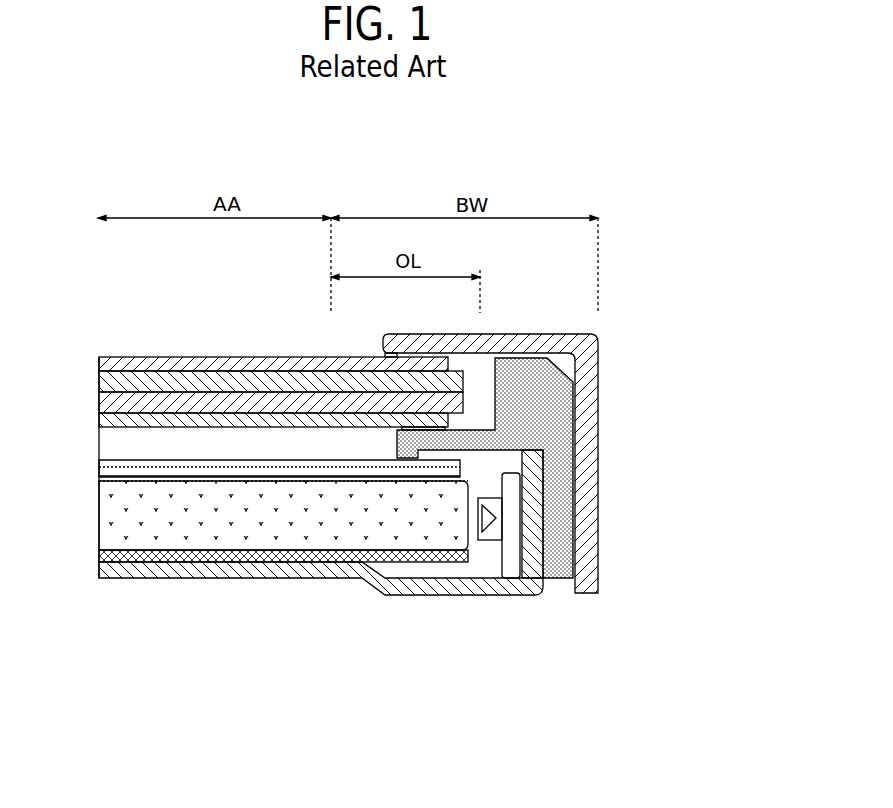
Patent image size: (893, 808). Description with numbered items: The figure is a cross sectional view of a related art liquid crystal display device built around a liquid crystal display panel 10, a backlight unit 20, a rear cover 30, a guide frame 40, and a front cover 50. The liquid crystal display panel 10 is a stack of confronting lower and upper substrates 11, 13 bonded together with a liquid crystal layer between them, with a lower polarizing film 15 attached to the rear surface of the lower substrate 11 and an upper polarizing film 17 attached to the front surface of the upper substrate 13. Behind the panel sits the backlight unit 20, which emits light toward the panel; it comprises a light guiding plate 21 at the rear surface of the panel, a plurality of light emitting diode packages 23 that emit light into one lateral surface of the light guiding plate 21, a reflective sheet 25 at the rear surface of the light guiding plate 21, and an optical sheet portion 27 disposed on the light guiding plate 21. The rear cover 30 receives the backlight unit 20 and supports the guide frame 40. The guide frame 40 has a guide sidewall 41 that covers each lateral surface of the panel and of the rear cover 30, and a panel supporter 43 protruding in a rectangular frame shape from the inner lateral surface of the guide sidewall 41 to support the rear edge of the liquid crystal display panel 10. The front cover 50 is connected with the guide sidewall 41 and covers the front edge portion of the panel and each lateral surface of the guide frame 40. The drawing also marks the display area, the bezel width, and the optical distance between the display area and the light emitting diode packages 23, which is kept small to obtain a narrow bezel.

The liquid crystal display panel 10 is at (281, 338).
The lower substrate 11 is at (172, 413).
The upper substrate 13 is at (210, 382).
The lower polarizing film 15 is at (247, 284).
The upper polarizing film 17 is at (250, 365).
The backlight unit 20 is at (321, 602).
The light guiding plate 21 is at (287, 522).
The light emitting diode packages 23 is at (439, 598).
The reflective sheet 25 is at (203, 558).
The optical sheet portion 27 is at (138, 463).
The rear cover 30 is at (530, 587).
The guide frame 40 is at (566, 468).
The guide sidewall 41 is at (563, 523).
The panel supporter 43 is at (465, 435).
The front cover 50 is at (597, 340).